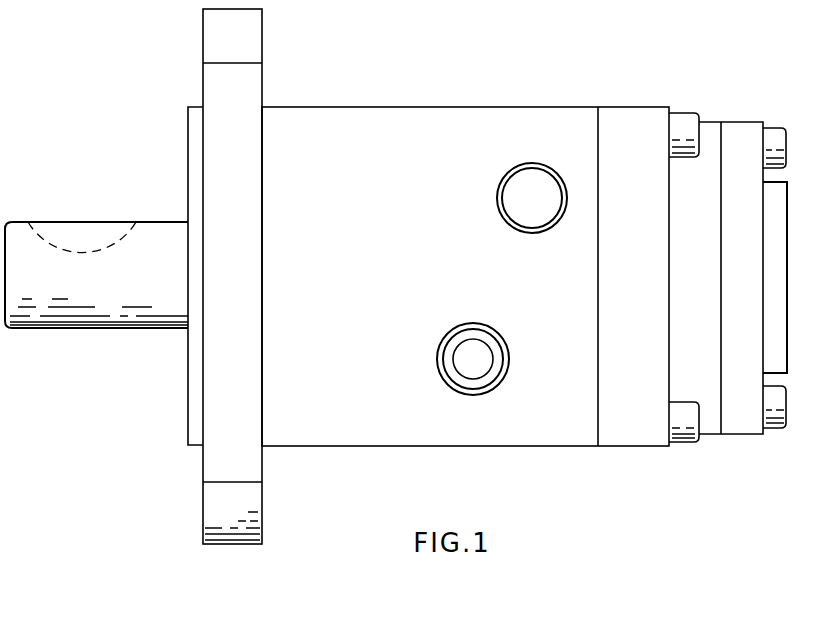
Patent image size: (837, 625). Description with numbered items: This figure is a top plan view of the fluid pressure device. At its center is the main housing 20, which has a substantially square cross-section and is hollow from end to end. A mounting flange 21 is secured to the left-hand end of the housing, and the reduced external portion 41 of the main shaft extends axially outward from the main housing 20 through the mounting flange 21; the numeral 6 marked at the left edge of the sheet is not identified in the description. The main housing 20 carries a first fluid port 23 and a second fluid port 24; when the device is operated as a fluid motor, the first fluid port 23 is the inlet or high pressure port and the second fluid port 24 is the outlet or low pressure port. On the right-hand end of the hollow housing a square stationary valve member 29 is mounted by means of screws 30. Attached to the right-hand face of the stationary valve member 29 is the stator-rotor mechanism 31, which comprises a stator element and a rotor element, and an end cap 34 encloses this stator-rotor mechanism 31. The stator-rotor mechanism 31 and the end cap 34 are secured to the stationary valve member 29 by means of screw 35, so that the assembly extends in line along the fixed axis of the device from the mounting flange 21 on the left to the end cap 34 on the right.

The drive shaft 6 is at (4, 183).
The main housing 20 is at (443, 113).
The mounting flange 21 is at (262, 96).
The first fluid port 23 is at (547, 167).
The second fluid port 24 is at (497, 339).
The stationary valve member 29 is at (608, 113).
The screws 30 is at (684, 118).
The stator-rotor mechanism 31 is at (700, 263).
The end cap 34 is at (755, 307).
The screw 35 is at (772, 135).
The reduced external portion 41 is at (113, 320).